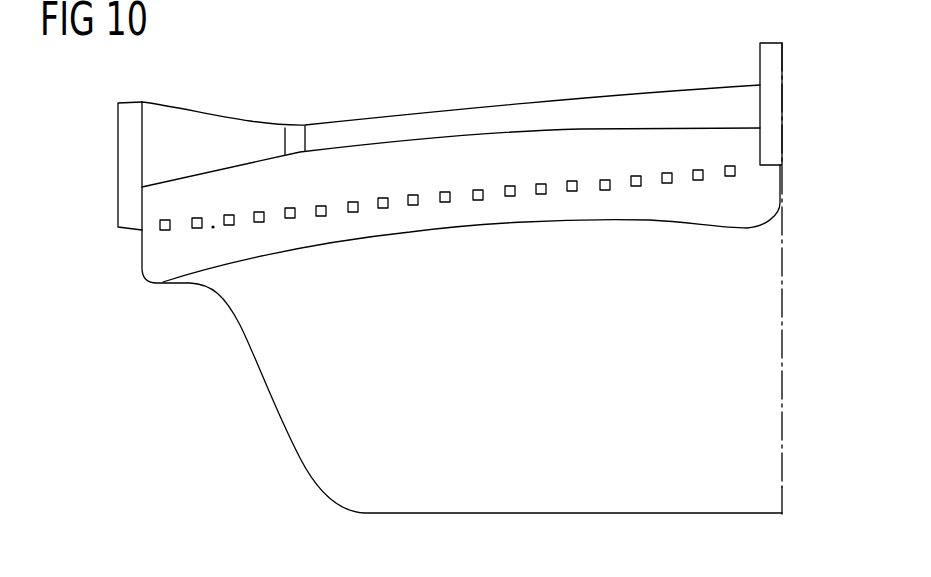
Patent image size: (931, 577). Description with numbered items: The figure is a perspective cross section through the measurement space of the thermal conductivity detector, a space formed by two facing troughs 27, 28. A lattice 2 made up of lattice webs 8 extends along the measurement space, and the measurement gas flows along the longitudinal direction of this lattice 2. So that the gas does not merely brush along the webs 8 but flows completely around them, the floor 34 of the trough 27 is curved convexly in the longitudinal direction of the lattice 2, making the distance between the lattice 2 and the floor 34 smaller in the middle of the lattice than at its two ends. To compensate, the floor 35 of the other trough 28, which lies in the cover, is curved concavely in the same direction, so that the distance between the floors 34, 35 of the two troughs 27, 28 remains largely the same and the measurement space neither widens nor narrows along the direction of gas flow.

The lattice 2 is at (287, 230).
The webs 8 is at (510, 197).
The trough 27 is at (558, 207).
The other trough 28 is at (471, 150).
The floor of the trough 34 is at (364, 232).
The floor of the other trough 35 is at (336, 151).